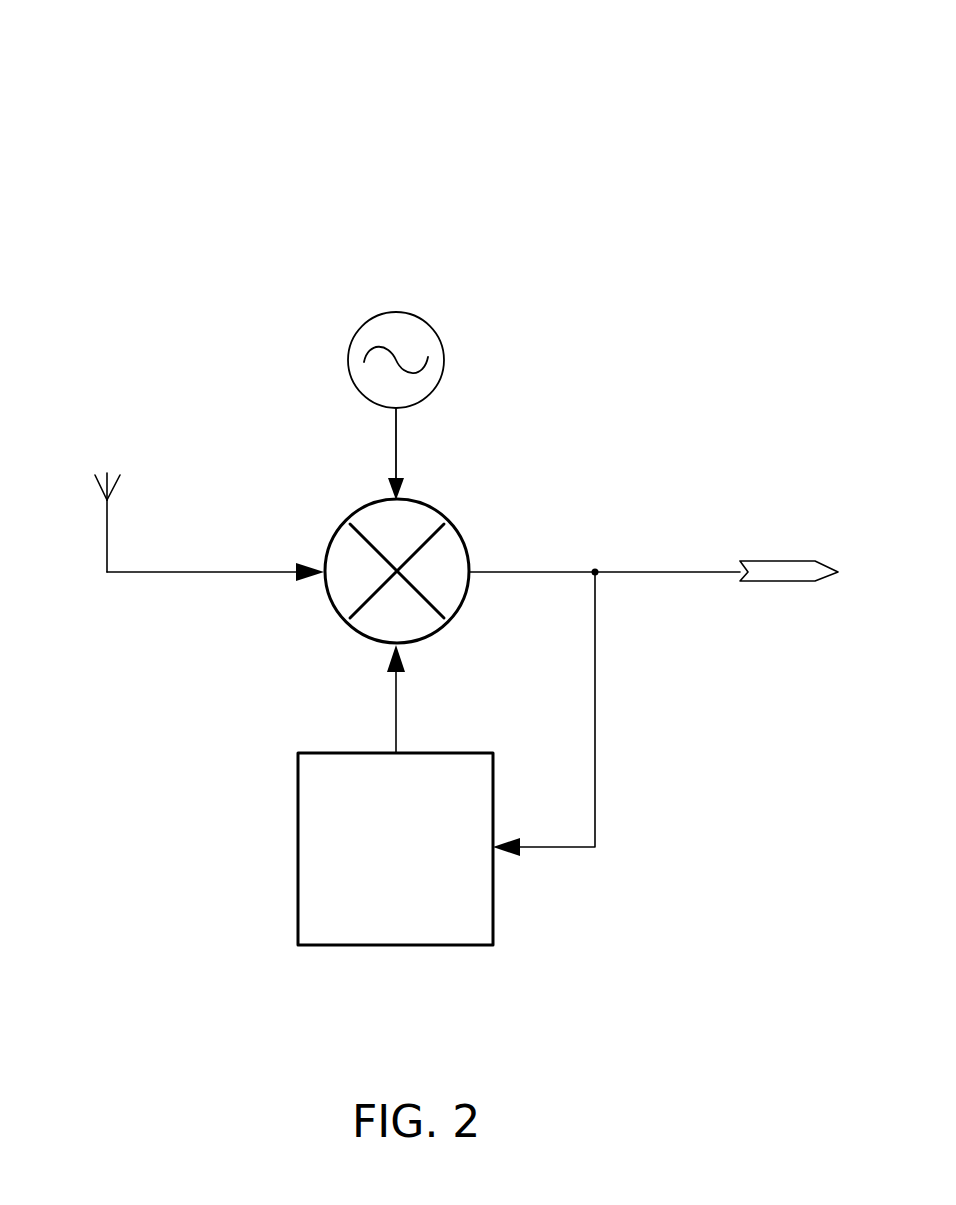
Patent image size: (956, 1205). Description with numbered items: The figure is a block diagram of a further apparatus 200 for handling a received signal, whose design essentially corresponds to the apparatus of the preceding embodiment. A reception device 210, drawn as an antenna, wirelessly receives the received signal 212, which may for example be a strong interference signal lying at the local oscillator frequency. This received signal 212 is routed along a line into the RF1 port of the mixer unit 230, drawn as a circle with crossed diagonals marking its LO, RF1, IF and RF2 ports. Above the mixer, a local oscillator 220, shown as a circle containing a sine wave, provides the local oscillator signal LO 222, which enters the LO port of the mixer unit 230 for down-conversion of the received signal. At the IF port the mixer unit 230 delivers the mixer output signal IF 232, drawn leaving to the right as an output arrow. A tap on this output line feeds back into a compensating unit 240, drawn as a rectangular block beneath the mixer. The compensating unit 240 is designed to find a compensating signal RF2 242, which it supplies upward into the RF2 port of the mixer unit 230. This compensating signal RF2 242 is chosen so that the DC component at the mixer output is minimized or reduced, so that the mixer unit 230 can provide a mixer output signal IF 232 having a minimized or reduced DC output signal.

The apparatus 200 is at (421, 118).
The reception device 210 is at (95, 561).
The received signal 212 is at (257, 560).
The local oscillator 220 is at (458, 352).
The local oscillator signal LO 222 is at (407, 440).
The mixer unit 230 is at (455, 628).
The mixer output signal IF 232 is at (778, 588).
The compensating unit 240 is at (508, 903).
The compensating signal RF2 242 is at (395, 710).